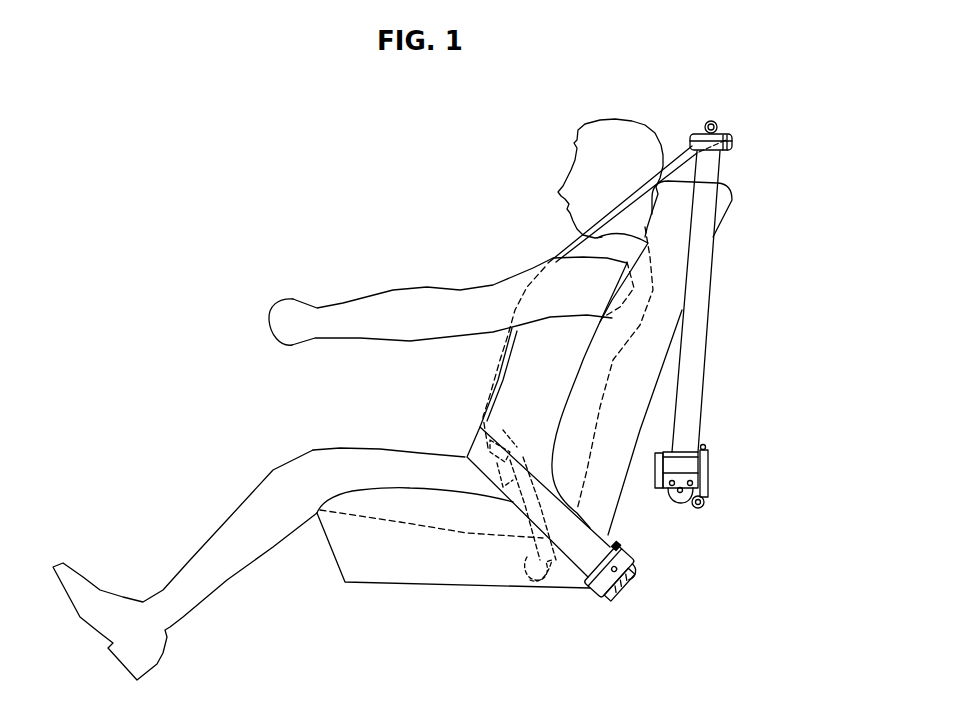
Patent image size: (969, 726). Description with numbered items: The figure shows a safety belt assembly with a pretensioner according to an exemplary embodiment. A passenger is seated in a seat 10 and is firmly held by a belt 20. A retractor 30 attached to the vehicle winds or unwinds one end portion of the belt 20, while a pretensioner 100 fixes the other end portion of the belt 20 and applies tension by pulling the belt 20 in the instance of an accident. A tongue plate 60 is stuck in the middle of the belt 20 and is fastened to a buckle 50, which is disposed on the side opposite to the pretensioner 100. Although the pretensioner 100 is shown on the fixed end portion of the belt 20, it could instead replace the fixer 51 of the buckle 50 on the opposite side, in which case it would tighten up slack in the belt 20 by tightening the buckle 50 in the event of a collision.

The seat 10 is at (640, 390).
The belt 20 is at (702, 289).
The retractor 30 is at (688, 470).
The buckle 50 is at (508, 490).
The fixer 51 is at (532, 557).
The tongue plate 60 is at (467, 457).
The pretensioner 100 is at (618, 602).